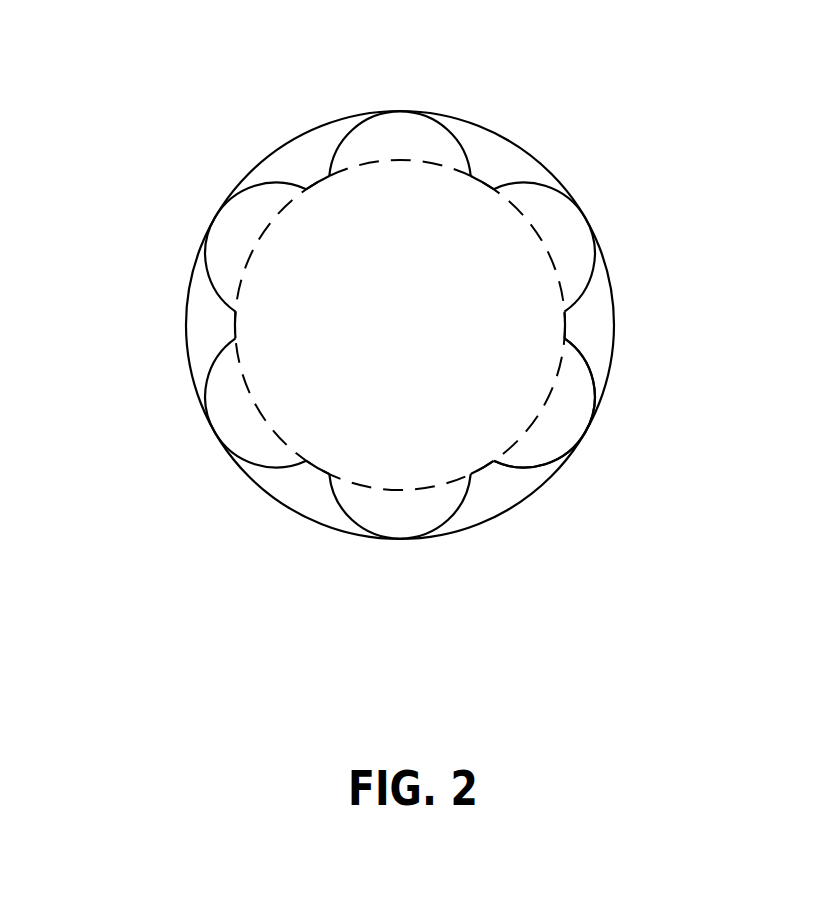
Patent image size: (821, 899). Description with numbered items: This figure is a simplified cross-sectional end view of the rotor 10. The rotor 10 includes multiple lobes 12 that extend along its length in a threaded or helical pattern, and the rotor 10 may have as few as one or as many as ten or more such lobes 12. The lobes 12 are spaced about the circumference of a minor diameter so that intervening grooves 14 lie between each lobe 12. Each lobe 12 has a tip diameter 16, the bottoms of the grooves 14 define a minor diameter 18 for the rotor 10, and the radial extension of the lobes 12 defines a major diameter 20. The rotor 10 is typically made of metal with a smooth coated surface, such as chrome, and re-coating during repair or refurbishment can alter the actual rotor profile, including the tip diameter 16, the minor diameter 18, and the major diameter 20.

The rotor 10 is at (321, 292).
The lobes 12 is at (207, 253).
The grooves 14 is at (205, 328).
The tip diameter 16 is at (590, 360).
The minor diameter 18 is at (532, 218).
The major diameter 20 is at (512, 140).